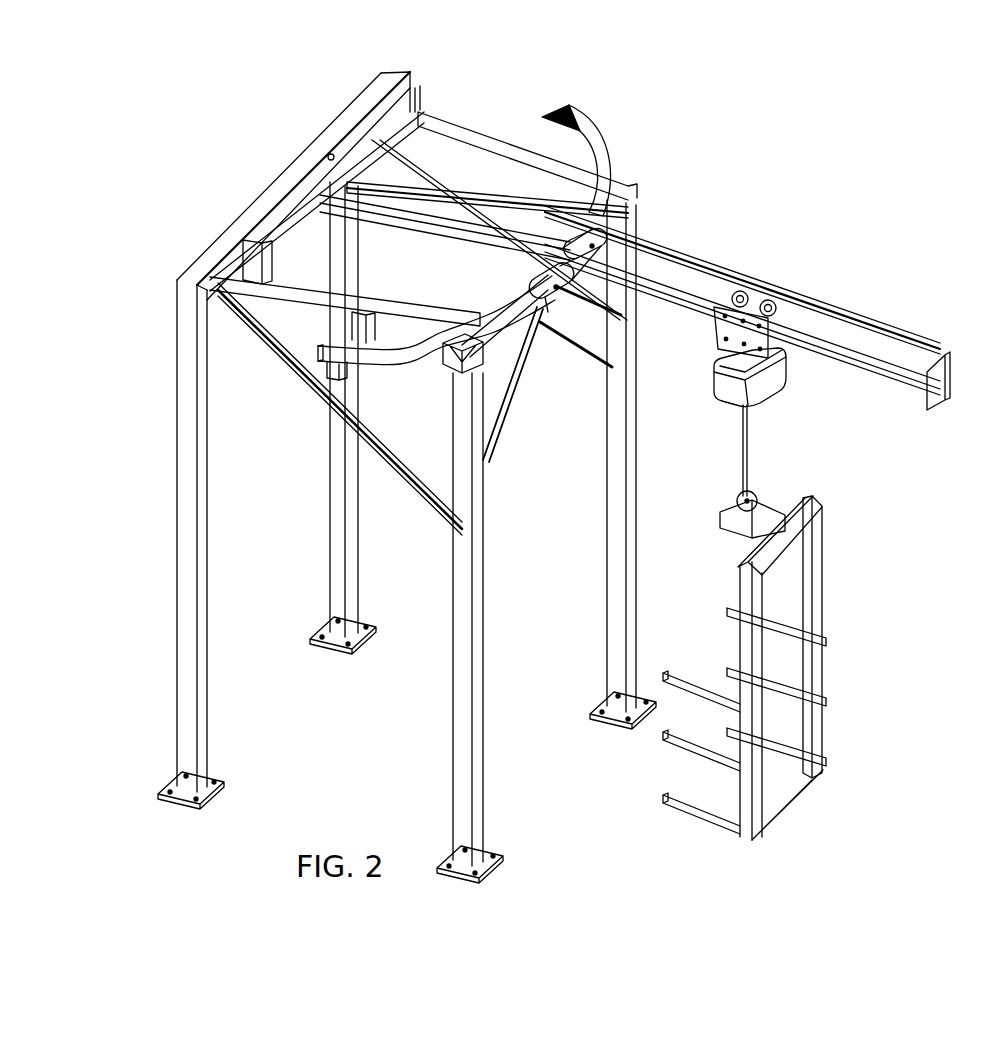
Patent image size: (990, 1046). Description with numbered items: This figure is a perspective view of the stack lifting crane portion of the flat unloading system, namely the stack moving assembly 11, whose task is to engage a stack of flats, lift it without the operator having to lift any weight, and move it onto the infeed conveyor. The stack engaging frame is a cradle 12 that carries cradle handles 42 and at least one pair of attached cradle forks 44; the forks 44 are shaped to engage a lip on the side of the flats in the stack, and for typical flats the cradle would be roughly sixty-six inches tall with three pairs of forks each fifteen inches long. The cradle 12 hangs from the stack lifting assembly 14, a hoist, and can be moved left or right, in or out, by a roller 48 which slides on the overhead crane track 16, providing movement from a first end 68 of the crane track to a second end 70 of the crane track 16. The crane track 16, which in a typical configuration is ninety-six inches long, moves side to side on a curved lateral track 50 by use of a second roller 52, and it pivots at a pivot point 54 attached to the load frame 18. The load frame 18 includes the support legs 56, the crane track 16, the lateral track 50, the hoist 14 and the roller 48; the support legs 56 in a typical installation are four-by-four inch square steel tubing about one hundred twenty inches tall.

The stack moving assembly 11 is at (785, 131).
The cradle 12 is at (745, 592).
The stack lifting assembly 14 is at (775, 386).
The crane track 16 is at (757, 354).
The load frame 18 is at (618, 358).
The cradle handles 42 is at (824, 564).
The cradle forks 44 is at (693, 672).
The roller 48 is at (735, 340).
The curved lateral track 50 is at (566, 108).
The second roller 52 is at (570, 290).
The pivot point 54 is at (328, 154).
The support legs 56 is at (606, 575).
The first end of the crane track 68 is at (367, 208).
The second end of the crane track 70 is at (860, 366).